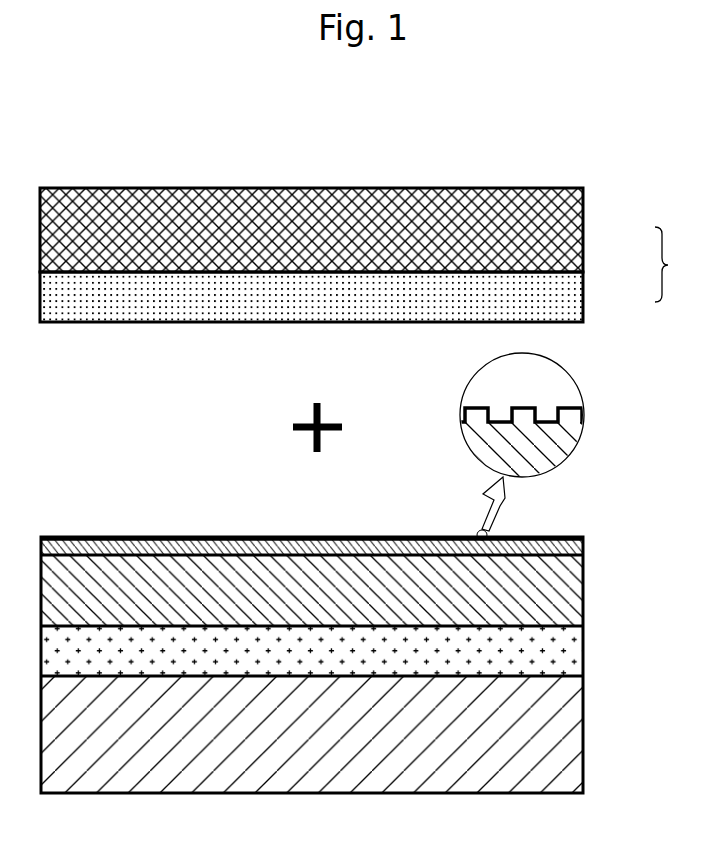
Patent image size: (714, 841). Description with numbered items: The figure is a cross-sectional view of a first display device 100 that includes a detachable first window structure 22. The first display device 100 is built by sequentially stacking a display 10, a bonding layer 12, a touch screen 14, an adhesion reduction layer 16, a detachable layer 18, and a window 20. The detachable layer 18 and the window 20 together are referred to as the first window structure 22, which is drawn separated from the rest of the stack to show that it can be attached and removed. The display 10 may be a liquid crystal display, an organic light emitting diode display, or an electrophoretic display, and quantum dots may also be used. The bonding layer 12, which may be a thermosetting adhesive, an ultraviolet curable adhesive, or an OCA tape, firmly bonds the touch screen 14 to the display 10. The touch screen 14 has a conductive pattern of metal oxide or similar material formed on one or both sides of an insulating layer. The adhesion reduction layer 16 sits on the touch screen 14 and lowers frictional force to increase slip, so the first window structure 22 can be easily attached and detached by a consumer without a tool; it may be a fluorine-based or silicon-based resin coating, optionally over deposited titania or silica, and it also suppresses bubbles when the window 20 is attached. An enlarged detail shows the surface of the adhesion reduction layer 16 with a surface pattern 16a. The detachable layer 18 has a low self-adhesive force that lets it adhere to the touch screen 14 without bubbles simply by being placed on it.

The first display device 100 is at (65, 123).
The display 10 is at (577, 733).
The bonding layer 12 is at (577, 653).
The touch screen 14 is at (575, 587).
The adhesion reduction layer 16 is at (577, 547).
The surface pattern of adhesive layer 16a is at (474, 536).
The detachable layer 18 is at (575, 302).
The window 20 is at (583, 228).
The first window structure 22 is at (677, 264).